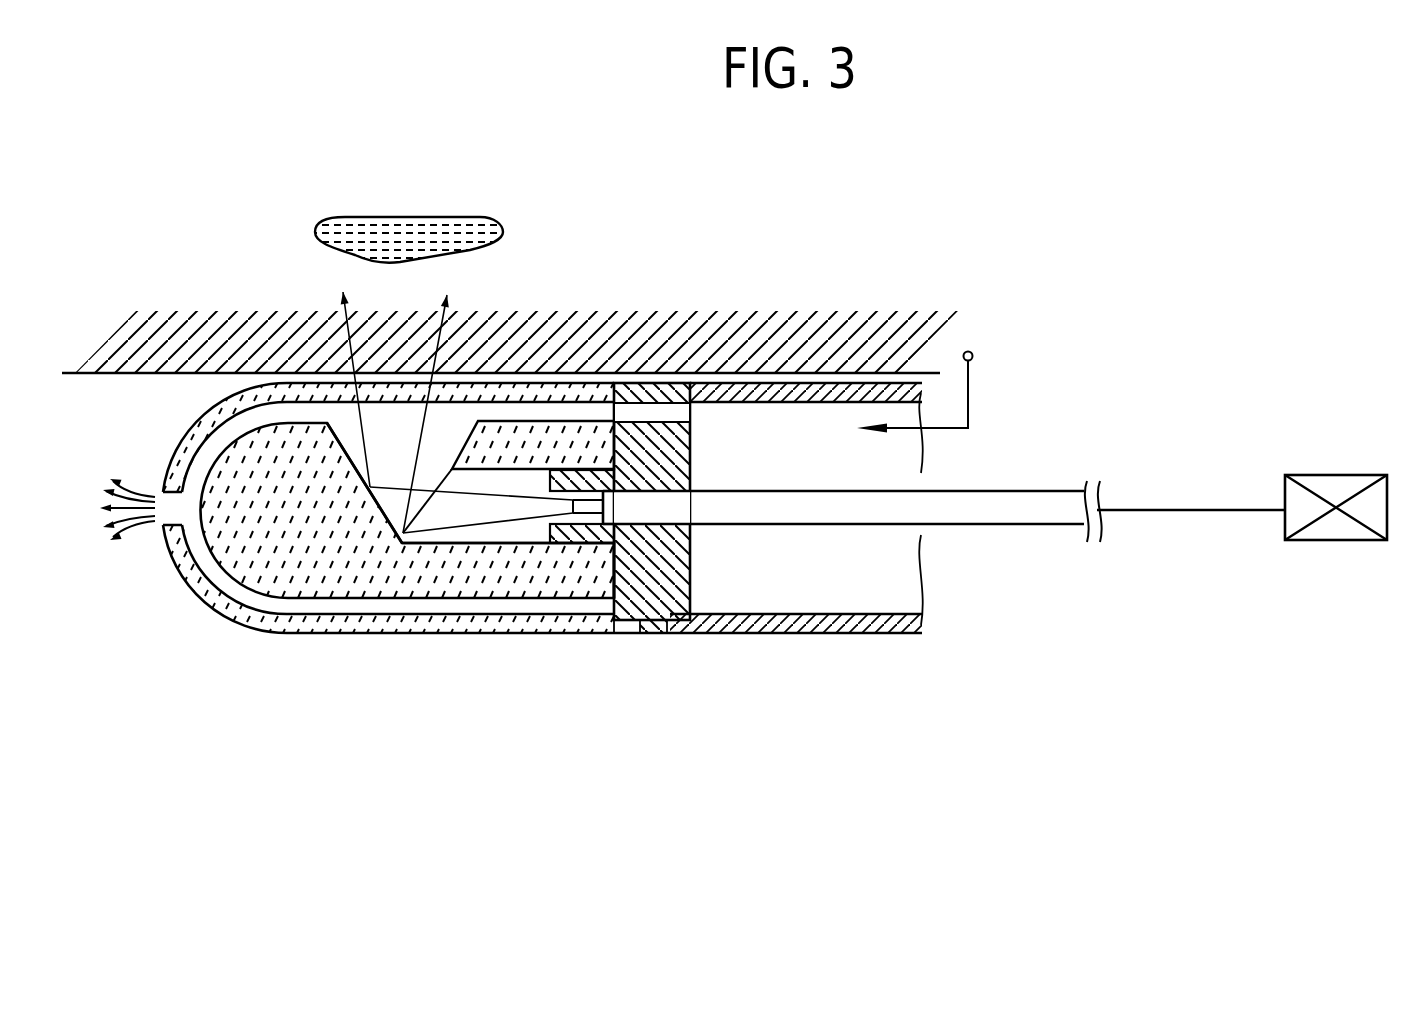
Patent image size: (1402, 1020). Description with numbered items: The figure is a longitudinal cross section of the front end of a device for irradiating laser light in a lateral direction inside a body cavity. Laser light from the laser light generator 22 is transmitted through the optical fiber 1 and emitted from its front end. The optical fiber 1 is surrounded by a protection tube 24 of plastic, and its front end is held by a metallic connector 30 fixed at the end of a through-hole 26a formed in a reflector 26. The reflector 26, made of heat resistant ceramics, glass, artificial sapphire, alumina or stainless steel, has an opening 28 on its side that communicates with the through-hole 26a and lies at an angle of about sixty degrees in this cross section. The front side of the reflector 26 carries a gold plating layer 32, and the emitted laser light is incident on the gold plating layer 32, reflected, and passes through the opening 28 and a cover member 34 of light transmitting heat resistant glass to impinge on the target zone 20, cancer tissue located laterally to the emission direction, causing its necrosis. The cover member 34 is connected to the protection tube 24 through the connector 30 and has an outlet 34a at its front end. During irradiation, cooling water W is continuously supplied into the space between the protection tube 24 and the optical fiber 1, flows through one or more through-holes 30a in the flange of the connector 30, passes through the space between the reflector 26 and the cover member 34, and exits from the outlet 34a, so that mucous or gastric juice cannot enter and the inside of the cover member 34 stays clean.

The optical fiber 1 is at (1037, 503).
The target zone 20 is at (423, 230).
The laser light generator 22 is at (1333, 493).
The protection tube 24 is at (802, 634).
The reflector 26 is at (227, 480).
The through-hole 26a is at (496, 540).
The opening 28 is at (455, 420).
The connector 30 is at (676, 456).
The through-holes 30a is at (640, 408).
The gold plating layer 32 is at (342, 437).
The cover member 34 is at (290, 623).
The outlet 34a is at (161, 527).
The cooling water W is at (920, 372).